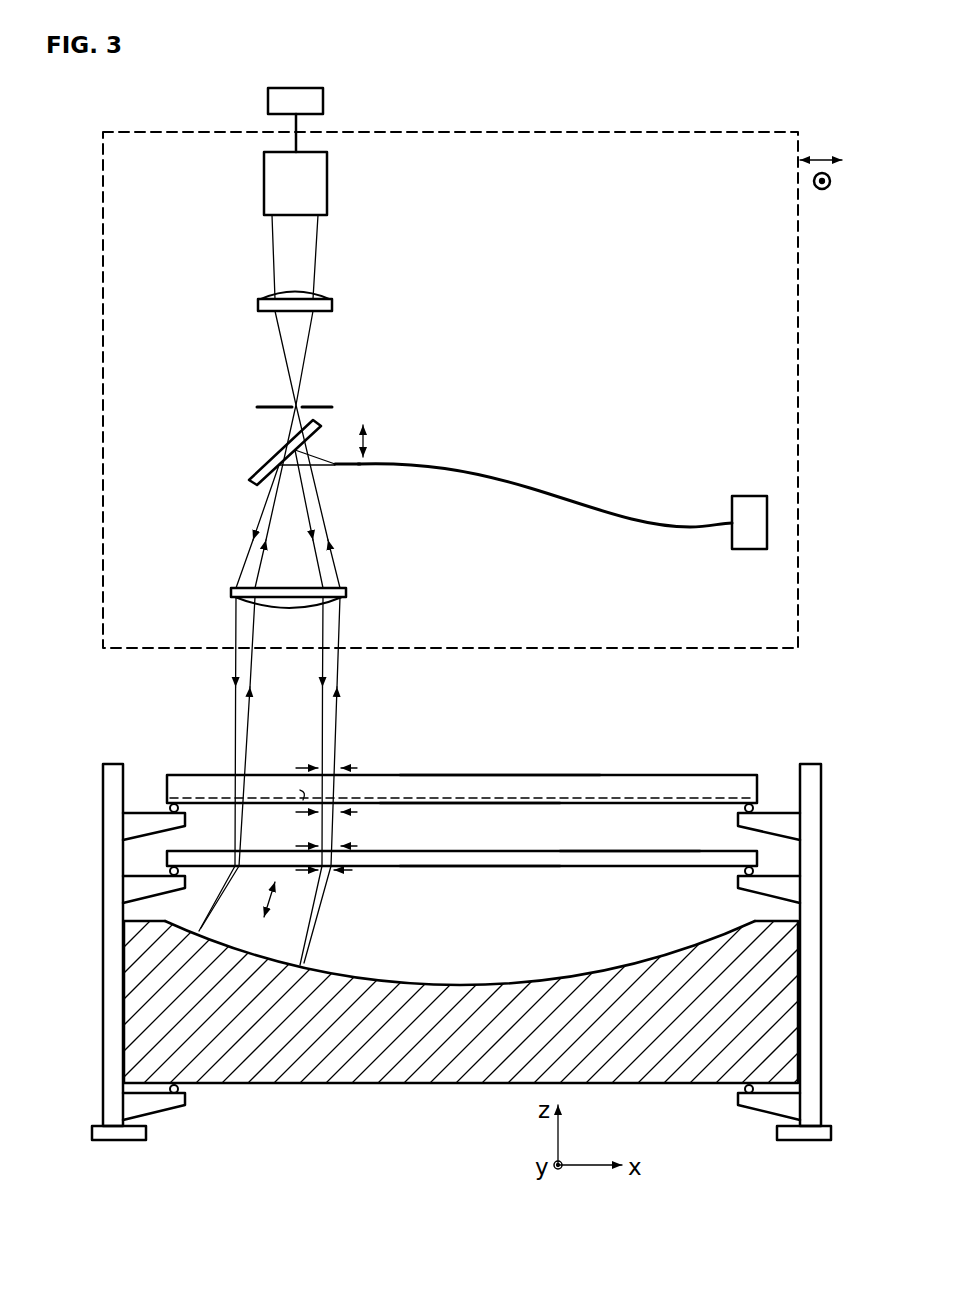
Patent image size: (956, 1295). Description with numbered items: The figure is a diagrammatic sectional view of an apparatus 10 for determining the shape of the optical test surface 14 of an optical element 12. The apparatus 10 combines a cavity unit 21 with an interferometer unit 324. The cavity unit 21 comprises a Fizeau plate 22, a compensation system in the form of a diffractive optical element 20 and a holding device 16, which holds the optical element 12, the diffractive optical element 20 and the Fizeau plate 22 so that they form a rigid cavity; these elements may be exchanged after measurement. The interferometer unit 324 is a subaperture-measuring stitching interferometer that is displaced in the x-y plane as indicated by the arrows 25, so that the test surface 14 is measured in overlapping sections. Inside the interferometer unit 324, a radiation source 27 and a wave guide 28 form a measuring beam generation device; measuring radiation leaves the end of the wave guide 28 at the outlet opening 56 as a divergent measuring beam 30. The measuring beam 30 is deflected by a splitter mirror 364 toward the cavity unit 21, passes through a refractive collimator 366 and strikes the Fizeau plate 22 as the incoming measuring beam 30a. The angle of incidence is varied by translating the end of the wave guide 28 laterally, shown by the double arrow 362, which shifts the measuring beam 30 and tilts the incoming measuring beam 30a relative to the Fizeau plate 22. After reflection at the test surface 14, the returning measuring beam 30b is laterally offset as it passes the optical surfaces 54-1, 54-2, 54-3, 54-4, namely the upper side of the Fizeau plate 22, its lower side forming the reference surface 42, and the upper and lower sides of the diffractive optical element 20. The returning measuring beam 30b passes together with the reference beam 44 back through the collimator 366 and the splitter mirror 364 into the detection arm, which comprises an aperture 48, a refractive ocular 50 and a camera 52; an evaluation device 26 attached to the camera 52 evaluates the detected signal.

The apparatus 10 is at (106, 670).
The optical element 12 is at (422, 1075).
The optical test surface 14 is at (524, 982).
The holding device 16 is at (112, 758).
The diffractive optical element 20 is at (643, 858).
The cavity unit 21 is at (100, 882).
The Fizeau plate 22 is at (698, 780).
The arrows 25 is at (822, 158).
The evaluation device 26 is at (324, 101).
The radiation source 27 is at (747, 550).
The wave guide 28 is at (615, 518).
The measuring beam 30 is at (314, 470).
The incoming measuring beam 30a is at (233, 690).
The returning measuring beam 30b is at (251, 690).
The reference surface 42 is at (531, 803).
The reference beam 44 is at (297, 797).
The aperture 48 is at (326, 406).
The refractive ocular 50 is at (327, 300).
The camera 52 is at (328, 180).
The optical surface 54-1 is at (505, 773).
The optical surface 54-2 is at (445, 804).
The optical surface 54-3 is at (604, 849).
The optical surface 54-4 is at (463, 868).
The outlet opening 56 is at (341, 472).
The interferometer unit 324 is at (103, 470).
The double arrow 362 is at (367, 430).
The splitter mirror 364 is at (267, 457).
The refractive collimator 366 is at (232, 596).